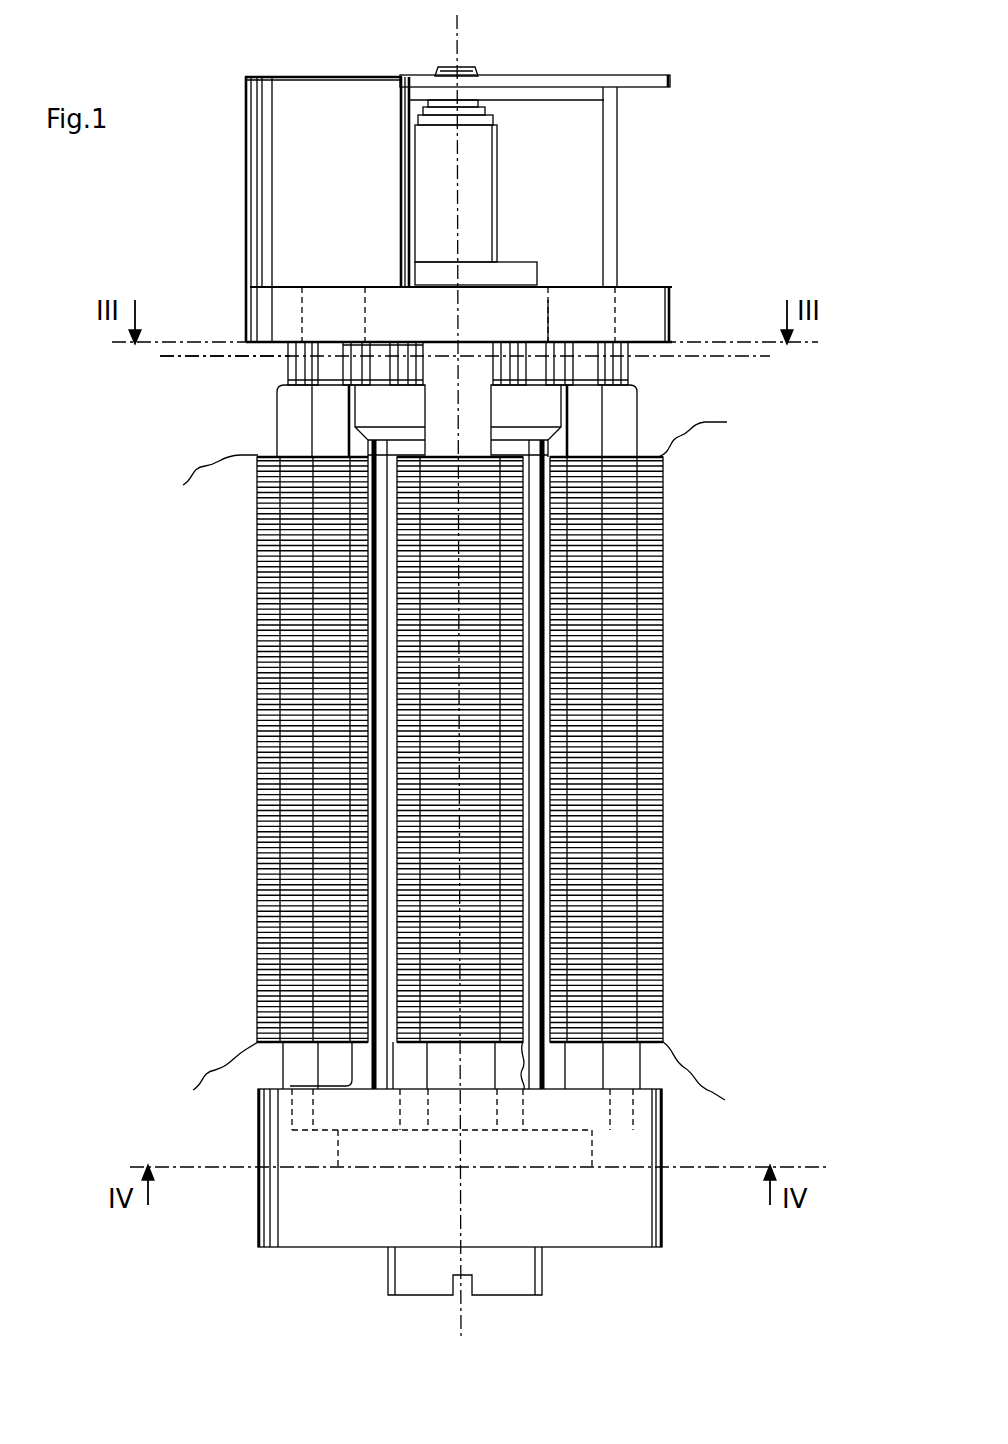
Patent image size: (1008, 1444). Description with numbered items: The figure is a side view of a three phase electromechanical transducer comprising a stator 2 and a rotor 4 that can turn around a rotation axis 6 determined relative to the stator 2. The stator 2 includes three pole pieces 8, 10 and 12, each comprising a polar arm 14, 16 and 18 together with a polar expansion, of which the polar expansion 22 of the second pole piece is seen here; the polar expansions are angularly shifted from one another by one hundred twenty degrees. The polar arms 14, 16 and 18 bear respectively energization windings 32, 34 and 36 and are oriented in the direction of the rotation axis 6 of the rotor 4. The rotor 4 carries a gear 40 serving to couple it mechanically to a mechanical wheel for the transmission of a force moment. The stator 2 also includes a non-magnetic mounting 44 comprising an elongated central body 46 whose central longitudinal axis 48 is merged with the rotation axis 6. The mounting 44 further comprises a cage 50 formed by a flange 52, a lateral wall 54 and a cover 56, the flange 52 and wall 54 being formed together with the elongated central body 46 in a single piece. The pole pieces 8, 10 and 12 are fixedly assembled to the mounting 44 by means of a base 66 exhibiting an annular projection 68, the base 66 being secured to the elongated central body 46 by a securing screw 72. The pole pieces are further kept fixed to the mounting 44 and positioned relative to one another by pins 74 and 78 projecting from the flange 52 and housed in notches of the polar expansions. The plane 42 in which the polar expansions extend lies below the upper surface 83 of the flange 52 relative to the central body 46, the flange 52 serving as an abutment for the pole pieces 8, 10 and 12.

The stator 2 is at (740, 384).
The rotor 4 is at (522, 210).
The rotation axis 6 is at (457, 32).
The pole piece 8 is at (298, 443).
The pole piece 10 is at (443, 428).
The pole piece 12 is at (623, 408).
The polar arm 14 is at (302, 665).
The polar arm 16 is at (452, 830).
The polar arm 18 is at (610, 833).
The polar expansion 22 is at (372, 370).
The energization winding 32 is at (275, 578).
The energization winding 34 is at (502, 572).
The energization winding 36 is at (665, 640).
The gear 40 is at (478, 160).
The plane 42 is at (175, 358).
The non-magnetic mounting 44 is at (725, 288).
The elongated central body 46 is at (405, 1072).
The central longitudinal axis 48 is at (457, 76).
The cage 50 is at (222, 222).
The flange 52 is at (641, 297).
The lateral wall 54 is at (305, 100).
The cover 56 is at (652, 80).
The base 66 is at (320, 1230).
The annular projection 68 is at (664, 1142).
The securing screw 72 is at (421, 1277).
The pin 74 is at (320, 367).
The pin 78 is at (585, 363).
The upper surface 83 is at (561, 272).